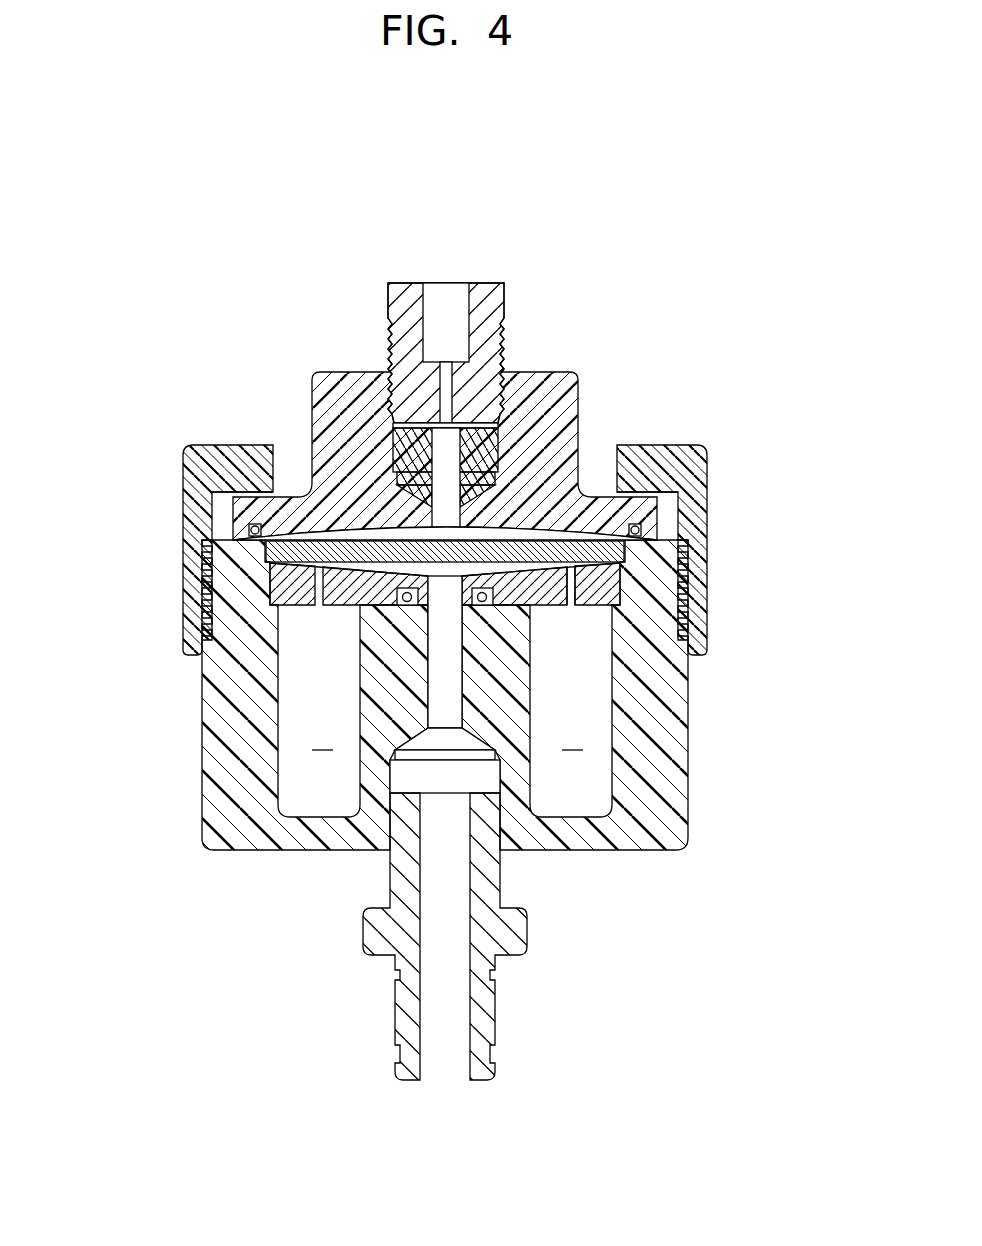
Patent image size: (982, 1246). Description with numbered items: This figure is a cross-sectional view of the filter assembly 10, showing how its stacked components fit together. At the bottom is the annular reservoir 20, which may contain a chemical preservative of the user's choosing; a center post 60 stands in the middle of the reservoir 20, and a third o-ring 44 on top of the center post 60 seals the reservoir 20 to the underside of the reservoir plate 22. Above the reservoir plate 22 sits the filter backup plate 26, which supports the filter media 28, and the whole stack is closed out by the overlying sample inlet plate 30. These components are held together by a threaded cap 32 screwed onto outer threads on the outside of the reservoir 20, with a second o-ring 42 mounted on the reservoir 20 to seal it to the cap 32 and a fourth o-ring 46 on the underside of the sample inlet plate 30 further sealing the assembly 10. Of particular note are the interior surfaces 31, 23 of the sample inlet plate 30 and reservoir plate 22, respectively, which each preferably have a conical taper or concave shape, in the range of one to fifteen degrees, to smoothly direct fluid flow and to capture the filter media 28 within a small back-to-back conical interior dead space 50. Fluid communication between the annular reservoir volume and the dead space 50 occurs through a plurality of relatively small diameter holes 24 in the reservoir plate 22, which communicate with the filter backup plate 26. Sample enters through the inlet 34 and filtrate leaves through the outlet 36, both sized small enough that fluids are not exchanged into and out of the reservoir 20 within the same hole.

The filter assembly 10 is at (598, 208).
The annular reservoir 20 is at (682, 757).
The reservoir plate 22 is at (358, 588).
The interior surface of reservoir plate 23 is at (360, 608).
The small diameter holes 24 is at (569, 606).
The filter backup plate 26 is at (686, 575).
The filter media 28 is at (660, 497).
The sample inlet plate 30 is at (565, 378).
The interior surface of sample inlet plate 31 is at (387, 530).
The threaded cap 32 is at (627, 446).
The inlet 34 is at (481, 297).
The outlet 36 is at (512, 940).
The second o-ring 42 is at (203, 628).
The third o-ring 44 is at (400, 603).
The fourth o-ring 46 is at (253, 530).
The dead space 50 is at (477, 567).
The center post 60 is at (502, 669).